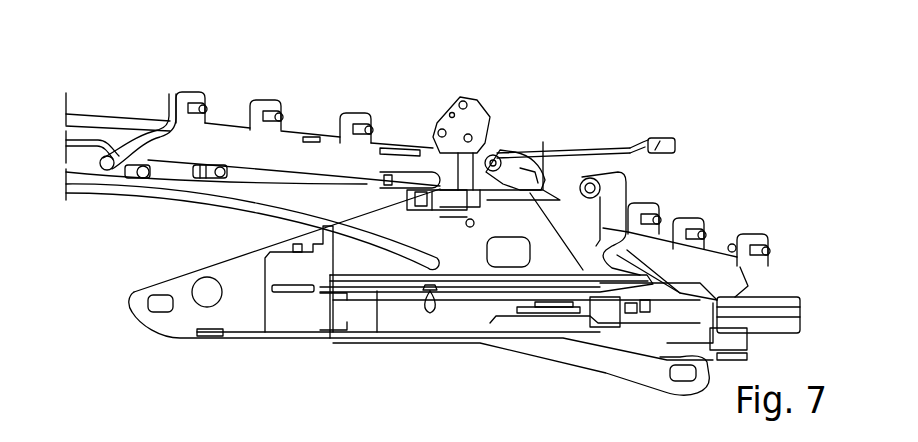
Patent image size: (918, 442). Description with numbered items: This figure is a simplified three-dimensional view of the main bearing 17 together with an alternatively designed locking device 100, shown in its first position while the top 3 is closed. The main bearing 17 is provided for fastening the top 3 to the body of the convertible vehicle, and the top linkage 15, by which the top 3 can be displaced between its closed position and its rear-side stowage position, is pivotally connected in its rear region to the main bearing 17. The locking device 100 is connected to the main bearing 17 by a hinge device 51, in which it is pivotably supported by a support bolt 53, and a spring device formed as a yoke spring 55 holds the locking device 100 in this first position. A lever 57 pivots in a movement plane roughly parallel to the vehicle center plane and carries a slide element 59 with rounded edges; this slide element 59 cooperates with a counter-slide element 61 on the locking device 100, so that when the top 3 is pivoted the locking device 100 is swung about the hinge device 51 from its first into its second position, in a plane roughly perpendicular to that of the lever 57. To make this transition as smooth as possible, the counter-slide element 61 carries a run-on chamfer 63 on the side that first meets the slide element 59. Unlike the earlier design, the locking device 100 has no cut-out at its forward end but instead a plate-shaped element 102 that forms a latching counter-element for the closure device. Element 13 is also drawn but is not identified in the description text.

The top 3 is at (145, 68).
The actuating bar 13 is at (574, 150).
The top linkage 15 is at (135, 190).
The main bearing 17 is at (230, 318).
The hinge device 51 is at (471, 95).
The support bolt 53 is at (492, 155).
The yoke spring 55 is at (501, 158).
The lever 57 is at (383, 148).
The slide element 59 is at (599, 186).
The counter-slide element 61 is at (537, 176).
The run-on chamfer 63 is at (503, 187).
The locking device 100 is at (615, 147).
The plate-shaped element 102 is at (662, 140).